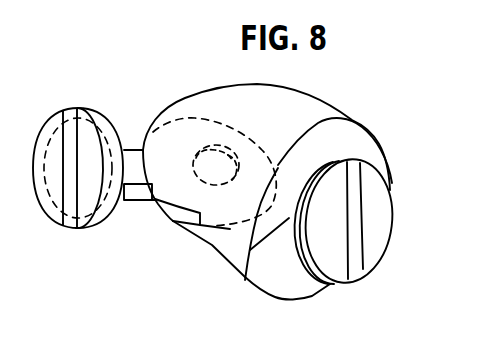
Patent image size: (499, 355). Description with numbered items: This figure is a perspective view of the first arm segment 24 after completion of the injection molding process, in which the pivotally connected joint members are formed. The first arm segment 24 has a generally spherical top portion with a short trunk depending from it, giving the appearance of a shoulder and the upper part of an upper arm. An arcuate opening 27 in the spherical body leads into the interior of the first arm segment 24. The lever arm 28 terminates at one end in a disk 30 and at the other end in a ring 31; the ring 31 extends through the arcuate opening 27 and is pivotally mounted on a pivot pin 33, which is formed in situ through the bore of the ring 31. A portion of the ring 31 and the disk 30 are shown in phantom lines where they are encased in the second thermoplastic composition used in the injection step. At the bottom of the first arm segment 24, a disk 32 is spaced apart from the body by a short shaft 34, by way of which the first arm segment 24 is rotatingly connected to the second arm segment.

The first arm segment 24 is at (344, 88).
The arcuate opening 27 is at (173, 213).
The lever arm 28 is at (140, 197).
The disk 30 is at (38, 130).
The ring 31 is at (170, 120).
The disk 32 is at (378, 200).
The pivot pin 33 is at (212, 138).
The short shaft 34 is at (245, 277).